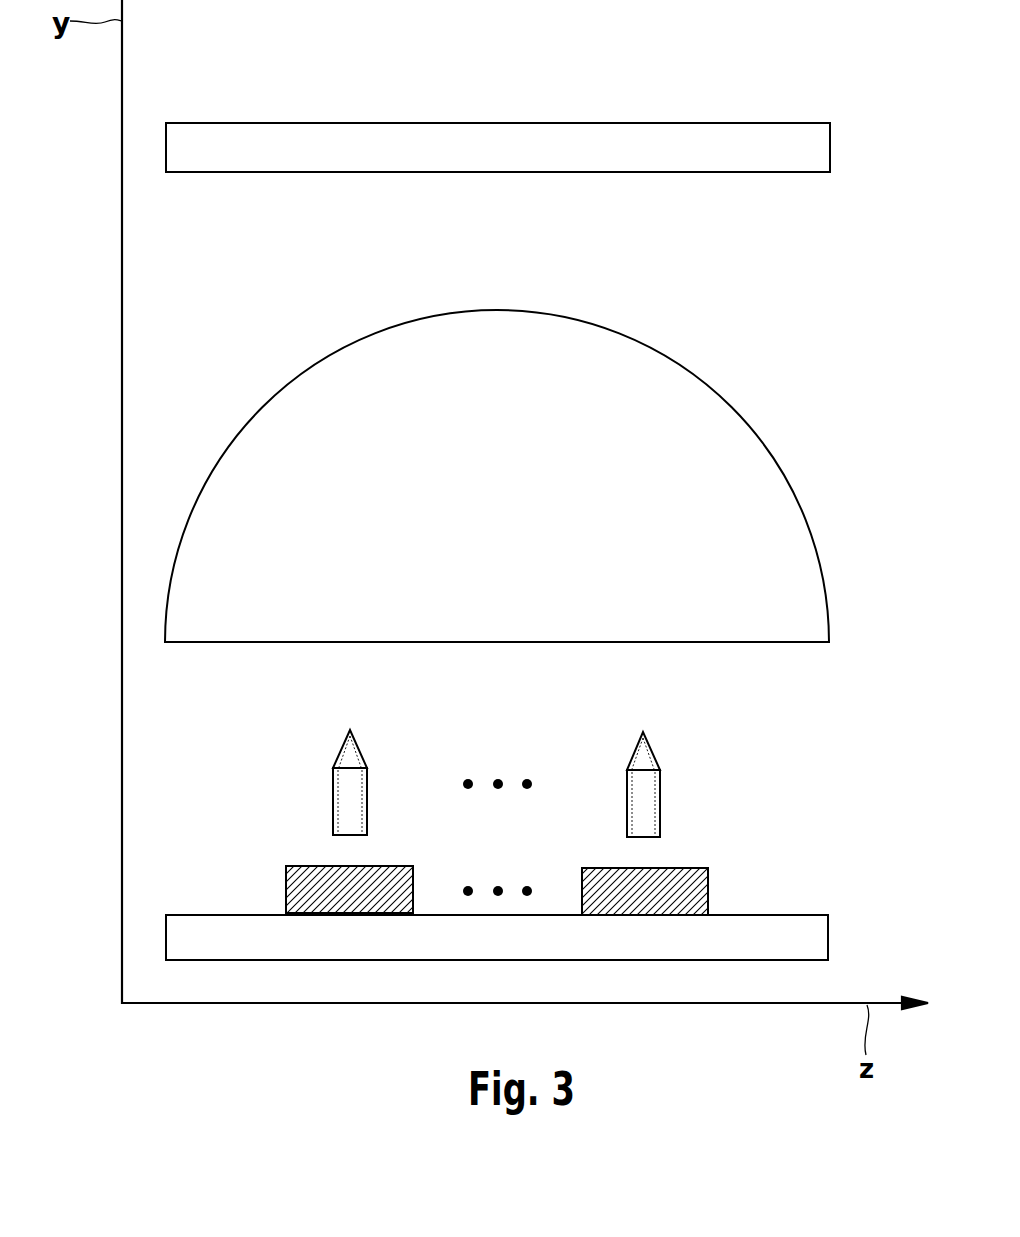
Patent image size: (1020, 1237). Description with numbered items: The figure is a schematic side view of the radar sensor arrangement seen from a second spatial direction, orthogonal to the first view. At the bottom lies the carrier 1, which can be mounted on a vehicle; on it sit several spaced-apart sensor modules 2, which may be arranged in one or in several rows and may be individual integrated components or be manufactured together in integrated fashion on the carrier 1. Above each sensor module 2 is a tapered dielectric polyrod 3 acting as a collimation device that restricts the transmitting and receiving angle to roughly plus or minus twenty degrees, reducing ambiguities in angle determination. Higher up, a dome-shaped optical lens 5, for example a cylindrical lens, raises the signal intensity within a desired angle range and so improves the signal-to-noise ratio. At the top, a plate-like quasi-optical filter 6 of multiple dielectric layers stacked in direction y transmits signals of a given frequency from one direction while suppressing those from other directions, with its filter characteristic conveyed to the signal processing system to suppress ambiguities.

The carrier 1 is at (820, 935).
The sensor module 2 is at (400, 872).
The polyrod 3 is at (343, 790).
The optical lens 5 is at (503, 320).
The quasi-optical filter 6 is at (503, 138).